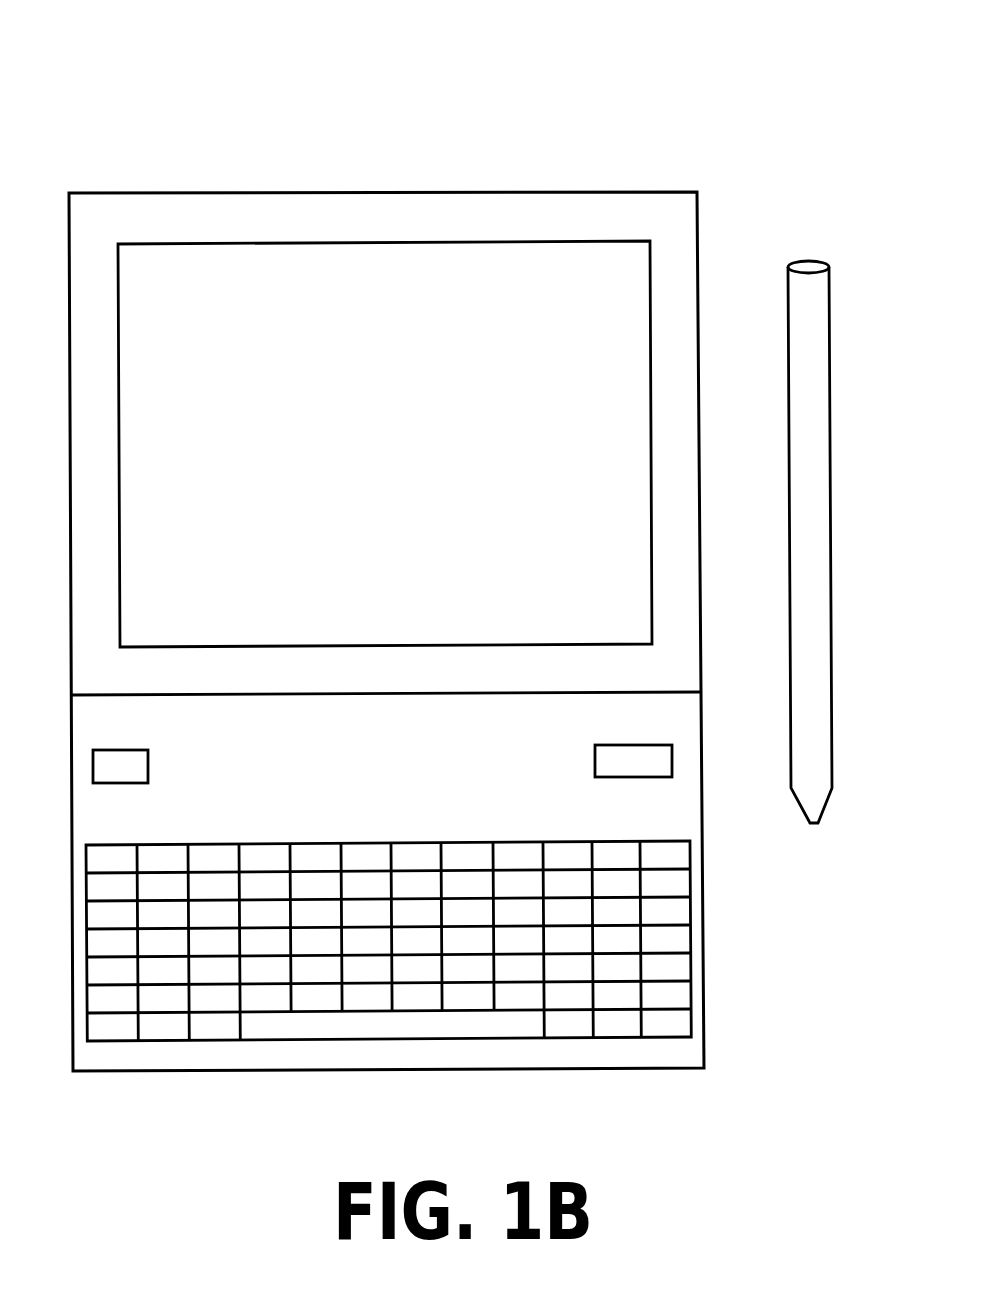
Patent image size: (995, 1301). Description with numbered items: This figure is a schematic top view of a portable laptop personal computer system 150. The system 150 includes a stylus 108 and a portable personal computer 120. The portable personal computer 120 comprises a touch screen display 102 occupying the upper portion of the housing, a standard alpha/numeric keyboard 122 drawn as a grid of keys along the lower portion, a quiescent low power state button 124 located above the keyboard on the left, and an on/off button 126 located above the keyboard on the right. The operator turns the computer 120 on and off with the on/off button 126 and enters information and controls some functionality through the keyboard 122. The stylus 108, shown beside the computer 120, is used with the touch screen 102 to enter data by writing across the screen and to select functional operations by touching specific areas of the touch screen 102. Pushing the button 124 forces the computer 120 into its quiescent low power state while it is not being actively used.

The portable personal computer system 150 is at (85, 33).
The portable personal computer 120 is at (160, 192).
The touch screen display 102 is at (408, 495).
The stylus 108 is at (832, 631).
The alpha/numeric keyboard 122 is at (355, 841).
The quiescent low power state button 124 is at (120, 749).
The on/off button 126 is at (620, 744).